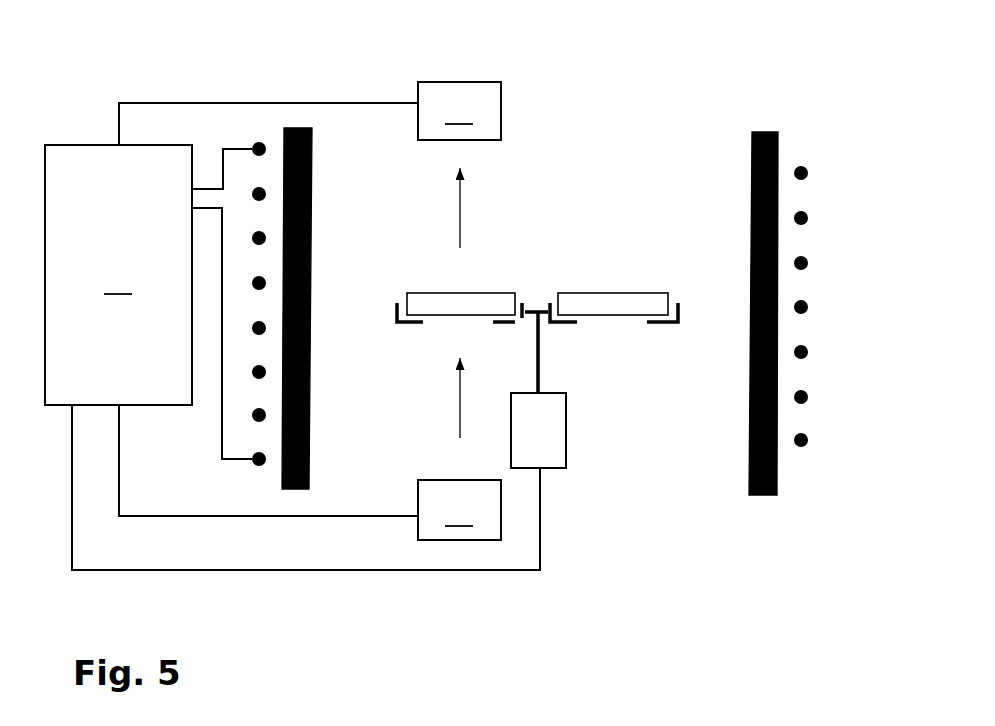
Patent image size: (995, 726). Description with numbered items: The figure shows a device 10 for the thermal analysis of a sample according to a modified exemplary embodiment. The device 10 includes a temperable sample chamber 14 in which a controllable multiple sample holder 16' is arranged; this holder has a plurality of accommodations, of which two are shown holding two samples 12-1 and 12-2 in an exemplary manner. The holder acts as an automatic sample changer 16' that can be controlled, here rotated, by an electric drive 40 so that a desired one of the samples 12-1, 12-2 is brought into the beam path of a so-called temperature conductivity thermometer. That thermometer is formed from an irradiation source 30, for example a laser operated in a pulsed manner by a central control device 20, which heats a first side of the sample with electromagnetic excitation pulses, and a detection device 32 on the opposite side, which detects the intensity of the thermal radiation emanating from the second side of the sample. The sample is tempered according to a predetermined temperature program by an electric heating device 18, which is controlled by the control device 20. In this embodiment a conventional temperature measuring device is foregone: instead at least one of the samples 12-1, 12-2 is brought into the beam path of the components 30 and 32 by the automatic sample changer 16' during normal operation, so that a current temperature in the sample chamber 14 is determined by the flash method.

The device for the thermal analysis of a sample 10 is at (468, 303).
The sample 12-1 is at (483, 302).
The sample 12-2 is at (633, 302).
The sample chamber 14 is at (662, 498).
The multiple sample holder 16' is at (537, 348).
The electric heating device 18 is at (818, 245).
The central control device 20 is at (118, 275).
The irradiation source 30 is at (459, 510).
The detection device 32 is at (459, 111).
The electric drive 40 is at (552, 433).